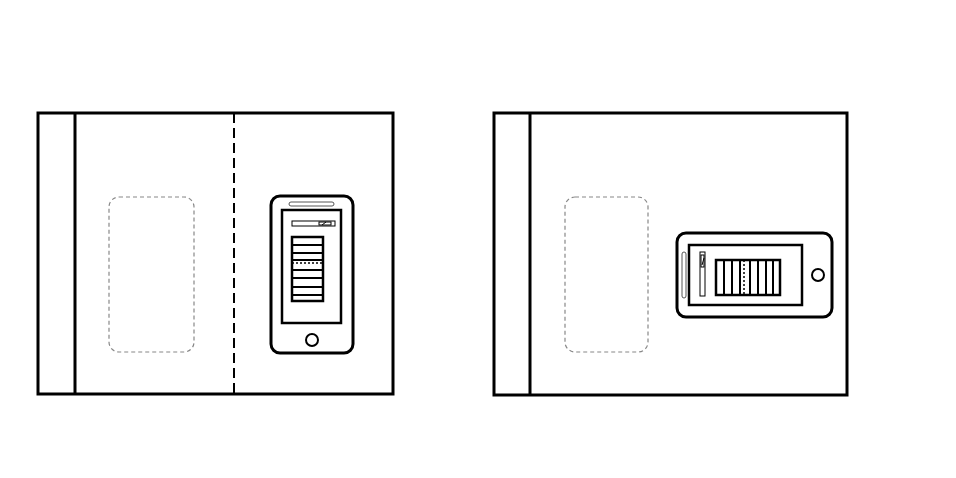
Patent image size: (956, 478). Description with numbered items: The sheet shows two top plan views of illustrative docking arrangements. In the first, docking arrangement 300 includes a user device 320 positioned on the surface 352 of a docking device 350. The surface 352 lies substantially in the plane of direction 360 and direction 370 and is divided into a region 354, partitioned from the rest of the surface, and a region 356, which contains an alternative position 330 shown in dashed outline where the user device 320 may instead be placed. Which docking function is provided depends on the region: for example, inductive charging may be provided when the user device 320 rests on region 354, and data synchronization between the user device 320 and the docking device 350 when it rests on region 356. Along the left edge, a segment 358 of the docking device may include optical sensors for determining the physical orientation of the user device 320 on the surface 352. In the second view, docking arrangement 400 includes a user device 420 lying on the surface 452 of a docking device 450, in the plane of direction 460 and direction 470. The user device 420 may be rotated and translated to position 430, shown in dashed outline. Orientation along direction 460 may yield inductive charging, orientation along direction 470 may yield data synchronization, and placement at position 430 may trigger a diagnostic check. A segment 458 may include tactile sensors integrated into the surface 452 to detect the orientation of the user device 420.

In FIG. 3, the docking arrangement 300 is at (80, 72).
In FIG. 3, the user device 320 is at (343, 196).
In FIG. 3, the position 330 is at (173, 318).
In FIG. 3, the docking device 350 is at (332, 397).
In FIG. 3, the surface 352 is at (314, 152).
In FIG. 3, the region 354 is at (285, 144).
In FIG. 3, the region 356 is at (130, 144).
In FIG. 3, the segment 358 is at (61, 405).
In FIG. 3, the direction 360 is at (140, 87).
In FIG. 3, the direction 370 is at (156, 100).
In FIG. 4, the docking arrangement 400 is at (535, 101).
In FIG. 4, the user device 420 is at (730, 233).
In FIG. 4, the position 430 is at (627, 318).
In FIG. 4, the docking device 450 is at (806, 397).
In FIG. 4, the surface 452 is at (705, 149).
In FIG. 4, the segment 458 is at (517, 405).
In FIG. 4, the direction 460 is at (649, 87).
In FIG. 4, the direction 470 is at (665, 100).